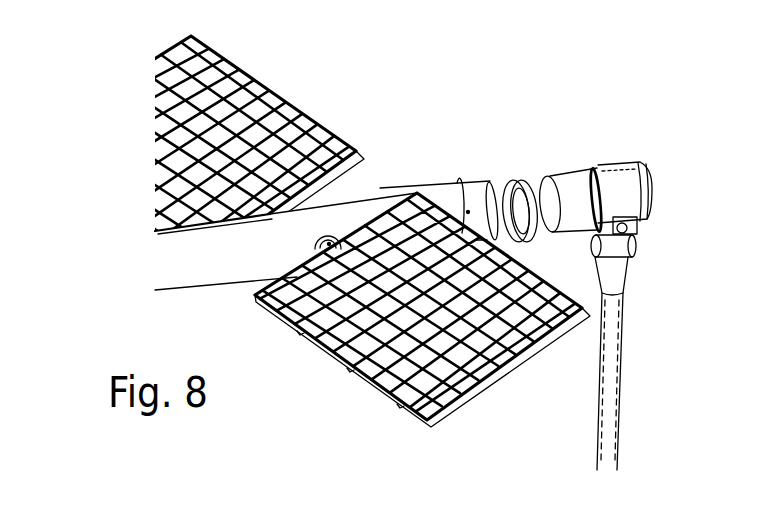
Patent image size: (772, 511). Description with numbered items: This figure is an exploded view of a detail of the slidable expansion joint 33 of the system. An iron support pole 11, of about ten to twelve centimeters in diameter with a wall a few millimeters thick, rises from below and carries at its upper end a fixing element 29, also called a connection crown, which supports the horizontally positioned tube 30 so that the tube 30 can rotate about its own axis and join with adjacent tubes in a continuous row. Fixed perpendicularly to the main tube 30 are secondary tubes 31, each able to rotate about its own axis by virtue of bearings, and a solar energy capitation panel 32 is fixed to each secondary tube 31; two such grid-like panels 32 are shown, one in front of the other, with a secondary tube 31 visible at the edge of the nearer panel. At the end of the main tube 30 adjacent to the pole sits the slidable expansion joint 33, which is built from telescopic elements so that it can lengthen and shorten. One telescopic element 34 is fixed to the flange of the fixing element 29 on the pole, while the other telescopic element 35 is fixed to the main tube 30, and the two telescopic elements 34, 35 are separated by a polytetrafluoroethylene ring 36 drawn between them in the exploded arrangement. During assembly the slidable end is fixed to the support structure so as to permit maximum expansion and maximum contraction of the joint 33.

The support pole 11 is at (610, 410).
The fixing element 29 is at (695, 183).
The tube 30 is at (177, 278).
The secondary tube 31 is at (320, 243).
The solar energy capitation panel 32 is at (466, 356).
The slidable expansion joint 33 is at (525, 150).
The telescopic element 34 is at (577, 185).
The telescopic element 35 is at (470, 182).
The polytetrafluoroethylene ring 36 is at (520, 182).